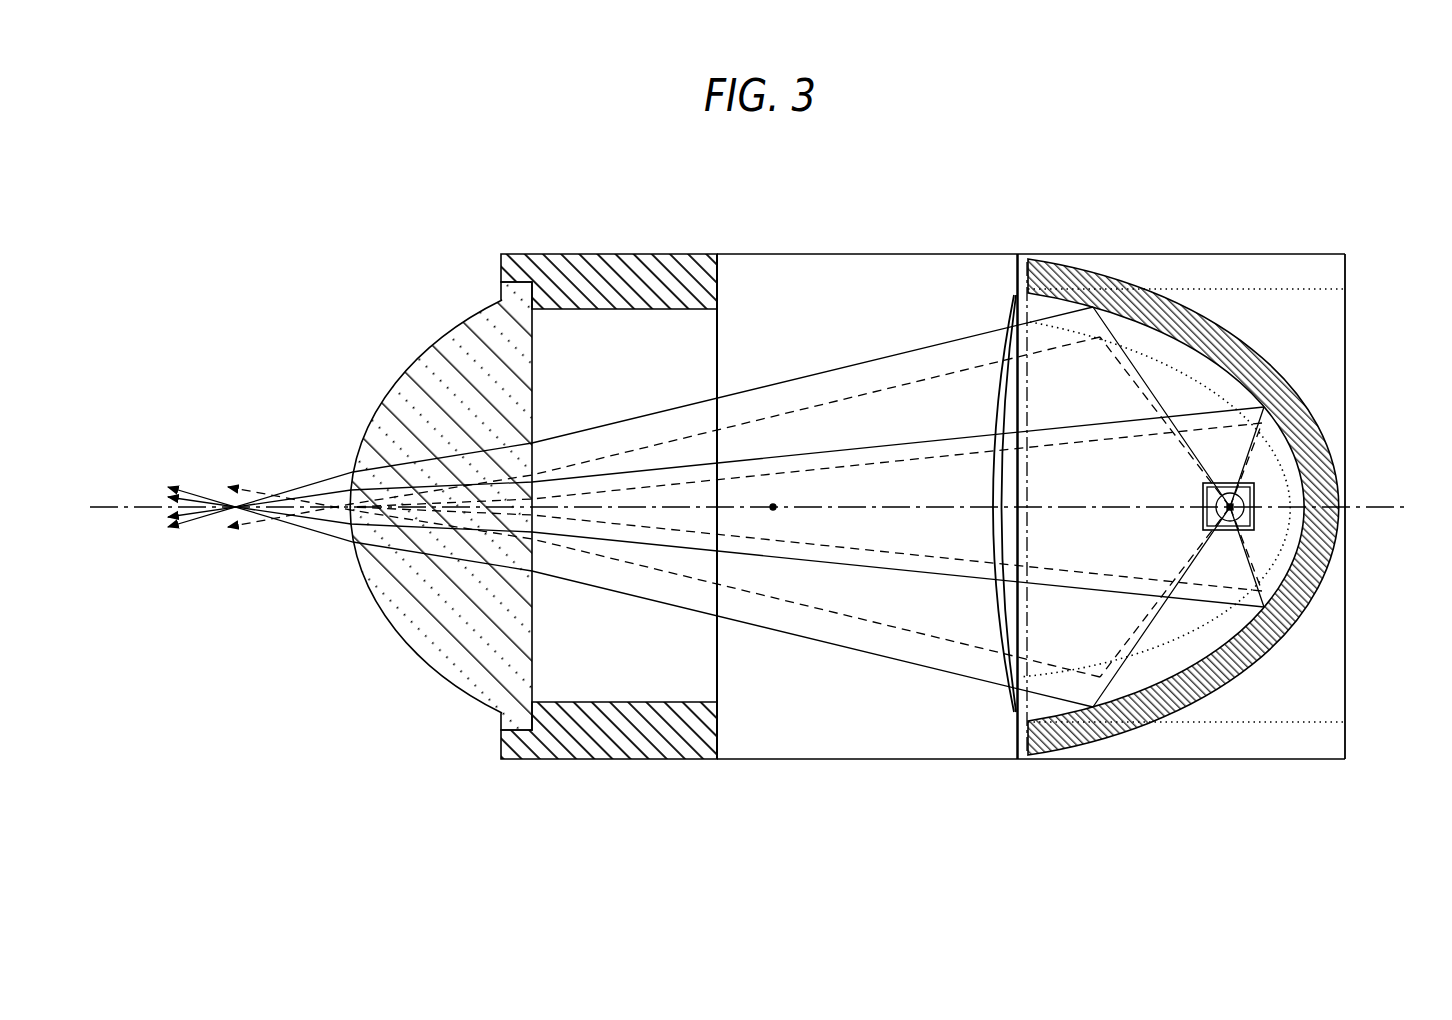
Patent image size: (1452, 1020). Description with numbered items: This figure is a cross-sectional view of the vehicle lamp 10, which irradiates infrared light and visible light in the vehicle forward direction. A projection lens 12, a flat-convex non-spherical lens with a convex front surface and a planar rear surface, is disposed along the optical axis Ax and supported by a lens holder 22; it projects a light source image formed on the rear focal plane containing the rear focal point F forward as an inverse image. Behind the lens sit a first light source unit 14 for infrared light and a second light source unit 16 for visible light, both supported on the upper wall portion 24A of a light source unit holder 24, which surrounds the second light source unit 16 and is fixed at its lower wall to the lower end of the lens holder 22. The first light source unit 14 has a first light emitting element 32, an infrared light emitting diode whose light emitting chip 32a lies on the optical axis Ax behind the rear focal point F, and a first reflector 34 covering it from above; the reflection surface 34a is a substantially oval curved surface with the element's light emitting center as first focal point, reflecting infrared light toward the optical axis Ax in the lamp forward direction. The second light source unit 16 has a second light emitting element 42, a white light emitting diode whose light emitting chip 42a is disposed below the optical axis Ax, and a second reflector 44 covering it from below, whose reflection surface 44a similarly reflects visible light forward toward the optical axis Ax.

The vehicle lamp 10 is at (244, 232).
The projection lens 12 is at (452, 330).
The lens holder 22 is at (552, 248).
The light source unit holder 24 is at (1075, 250).
The upper wall portion 24A is at (1043, 528).
The first light source unit 14 is at (1222, 305).
The second light source unit 16 is at (1283, 662).
The first reflector 34 is at (1283, 365).
The reflection surface 34a is at (1150, 322).
The first light emitting element 32 is at (1262, 478).
The light emitting chip 32a is at (1232, 507).
The second light emitting element 42 is at (1268, 518).
The light emitting chip 42a is at (1208, 511).
The second reflector 44 is at (993, 362).
The reflection surface 44a is at (1178, 640).
The rear focal point F is at (773, 507).
The optical axis Ax is at (116, 503).